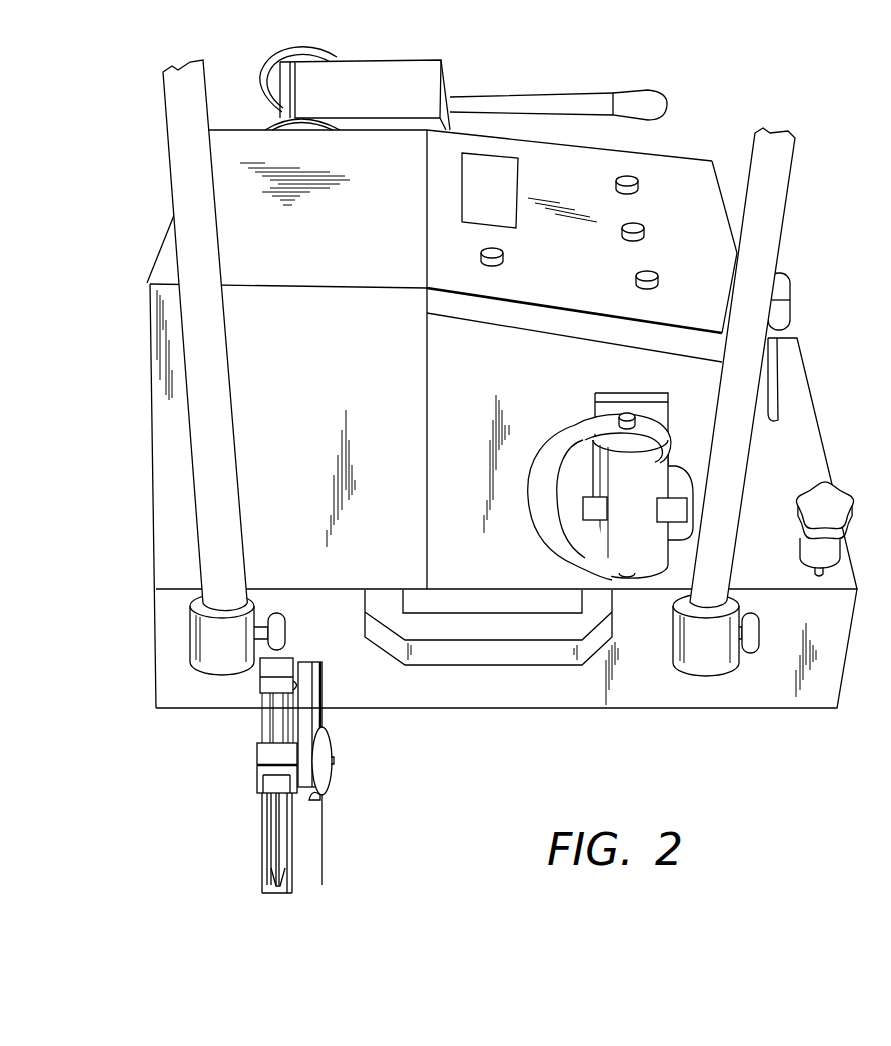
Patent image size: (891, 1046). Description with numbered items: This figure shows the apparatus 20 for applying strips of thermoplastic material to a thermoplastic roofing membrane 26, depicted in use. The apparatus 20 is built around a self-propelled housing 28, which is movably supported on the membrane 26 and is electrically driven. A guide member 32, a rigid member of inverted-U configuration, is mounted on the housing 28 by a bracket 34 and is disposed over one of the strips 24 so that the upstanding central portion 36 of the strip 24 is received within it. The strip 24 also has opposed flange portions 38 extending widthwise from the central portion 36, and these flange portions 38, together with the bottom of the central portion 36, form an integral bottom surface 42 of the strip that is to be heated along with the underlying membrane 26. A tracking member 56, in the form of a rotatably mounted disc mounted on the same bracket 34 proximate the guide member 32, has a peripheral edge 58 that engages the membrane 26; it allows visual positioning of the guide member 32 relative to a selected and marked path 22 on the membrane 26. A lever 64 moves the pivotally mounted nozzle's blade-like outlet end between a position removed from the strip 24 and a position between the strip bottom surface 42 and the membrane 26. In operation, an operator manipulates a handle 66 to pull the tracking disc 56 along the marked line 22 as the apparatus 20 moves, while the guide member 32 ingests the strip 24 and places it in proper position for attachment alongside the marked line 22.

The apparatus 20 is at (456, 474).
The marked path 22 is at (323, 845).
The strip 24 is at (270, 815).
The thermoplastic membrane 26 is at (259, 779).
The self-propelled housing 28 is at (660, 165).
The guide member 32 is at (267, 755).
The bracket 34 is at (307, 706).
The central portion 36 is at (279, 820).
The flange portions 38 is at (261, 862).
The bottom surface 42 is at (278, 894).
The tracking member 56 is at (324, 752).
The peripheral edge 58 is at (312, 801).
The lever 64 is at (590, 94).
The handle 66 is at (780, 172).